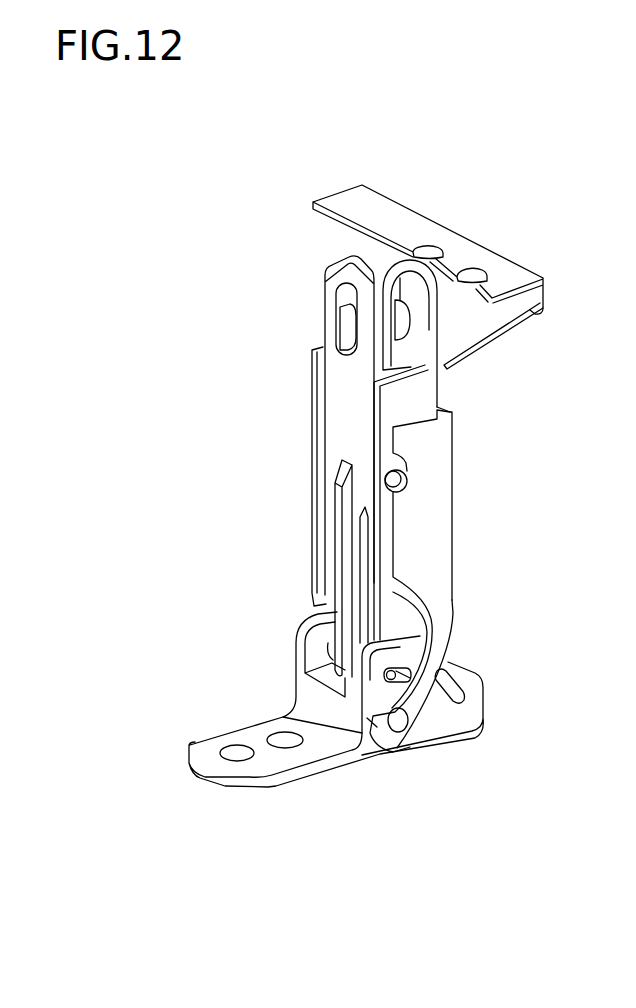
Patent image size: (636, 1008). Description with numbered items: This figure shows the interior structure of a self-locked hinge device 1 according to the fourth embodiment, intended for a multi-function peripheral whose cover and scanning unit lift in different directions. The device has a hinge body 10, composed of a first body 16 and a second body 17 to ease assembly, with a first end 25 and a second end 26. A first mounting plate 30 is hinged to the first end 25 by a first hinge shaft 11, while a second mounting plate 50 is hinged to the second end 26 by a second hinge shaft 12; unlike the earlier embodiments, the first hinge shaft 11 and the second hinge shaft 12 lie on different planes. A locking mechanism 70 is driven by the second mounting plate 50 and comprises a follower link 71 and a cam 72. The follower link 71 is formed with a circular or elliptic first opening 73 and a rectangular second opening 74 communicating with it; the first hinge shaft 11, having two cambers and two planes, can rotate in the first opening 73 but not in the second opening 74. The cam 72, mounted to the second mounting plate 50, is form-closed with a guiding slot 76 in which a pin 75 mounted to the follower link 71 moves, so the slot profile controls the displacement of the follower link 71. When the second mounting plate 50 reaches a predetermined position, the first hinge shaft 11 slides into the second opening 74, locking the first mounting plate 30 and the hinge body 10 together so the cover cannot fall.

The self-locked hinge device 1 is at (357, 142).
The first mounting plate 30 is at (313, 205).
The first end 25 is at (430, 317).
The locking mechanism 70 is at (318, 272).
The first opening 73 is at (337, 294).
The second opening 74 is at (337, 370).
The first hinge shaft 11 is at (350, 330).
The hinge body 10 is at (543, 410).
The first body 16 is at (427, 392).
The second body 17 is at (443, 508).
The pin 75 is at (417, 727).
The cam 72 is at (455, 667).
The second hinge shaft 12 is at (398, 732).
The follower link 71 is at (332, 438).
The second mounting plate 50 is at (353, 727).
The second end 26 is at (402, 686).
The guiding slot 76 is at (465, 690).